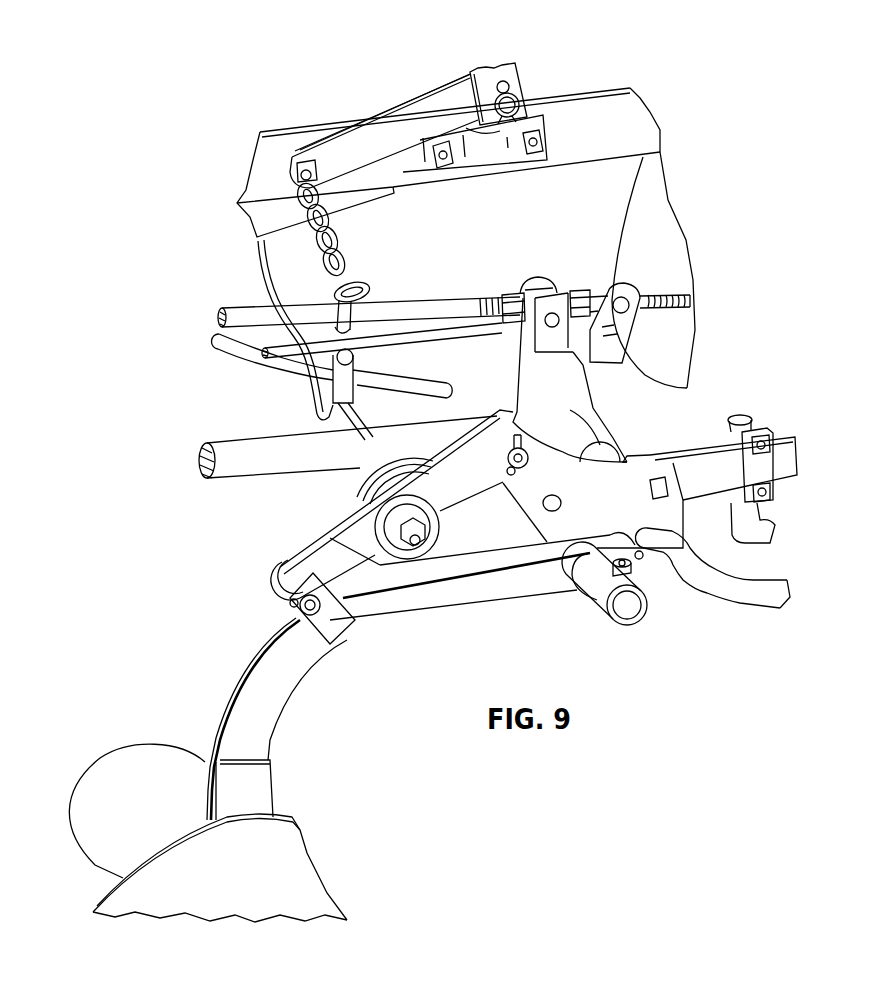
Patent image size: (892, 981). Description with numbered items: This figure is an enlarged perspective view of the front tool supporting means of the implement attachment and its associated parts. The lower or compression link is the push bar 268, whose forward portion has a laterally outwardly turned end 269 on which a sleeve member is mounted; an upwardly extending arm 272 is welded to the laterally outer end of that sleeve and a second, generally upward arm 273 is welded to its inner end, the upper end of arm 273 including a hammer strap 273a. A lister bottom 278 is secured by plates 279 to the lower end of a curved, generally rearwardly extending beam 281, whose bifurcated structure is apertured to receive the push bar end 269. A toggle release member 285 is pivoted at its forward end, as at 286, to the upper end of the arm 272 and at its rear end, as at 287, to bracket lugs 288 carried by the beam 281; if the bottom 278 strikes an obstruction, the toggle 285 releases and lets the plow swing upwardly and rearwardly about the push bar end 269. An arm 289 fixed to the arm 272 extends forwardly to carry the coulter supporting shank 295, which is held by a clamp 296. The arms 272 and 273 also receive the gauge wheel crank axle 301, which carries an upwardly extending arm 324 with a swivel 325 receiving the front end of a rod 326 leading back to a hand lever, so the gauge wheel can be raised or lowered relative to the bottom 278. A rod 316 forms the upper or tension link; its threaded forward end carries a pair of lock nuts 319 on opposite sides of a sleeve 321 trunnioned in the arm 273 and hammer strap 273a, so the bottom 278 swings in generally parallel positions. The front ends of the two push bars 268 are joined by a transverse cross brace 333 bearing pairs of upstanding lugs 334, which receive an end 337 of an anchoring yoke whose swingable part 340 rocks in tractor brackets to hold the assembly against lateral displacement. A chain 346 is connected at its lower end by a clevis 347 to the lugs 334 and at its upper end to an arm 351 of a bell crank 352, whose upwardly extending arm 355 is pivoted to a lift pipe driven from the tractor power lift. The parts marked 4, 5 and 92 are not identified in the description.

The tool bar 4 is at (303, 135).
The frame panel 5 is at (631, 192).
The mounting plate 92 is at (415, 167).
The push bar 268 is at (246, 466).
The laterally outwardly turned end 269 is at (627, 618).
The upwardly extending arm 272 is at (524, 497).
The second arm 273 is at (573, 408).
The hammer strap 273a is at (537, 285).
The lister bottom 278 is at (290, 850).
The plates 279 is at (227, 787).
The curved beam 281 is at (270, 705).
The toggle release member 285 is at (327, 522).
The forward pivot 286 is at (527, 466).
The rear pivot 287 is at (292, 606).
The bracket lugs 288 is at (338, 626).
The arm 289 is at (698, 459).
The coulter supporting shank 295 is at (732, 525).
The clamp 296 is at (770, 432).
The gauge wheel crank axle 301 is at (677, 592).
The rod 316 is at (243, 316).
The lock nuts 319 is at (509, 299).
The sleeve 321 is at (549, 300).
The upwardly extending arm 324 is at (598, 386).
The swivel 325 is at (613, 284).
The rod 326 is at (427, 332).
The transverse cross brace 333 is at (266, 265).
The upstanding lugs 334 is at (340, 378).
The yoke end 337 is at (427, 382).
The swingable yoke part 340 is at (232, 353).
The chain 346 is at (339, 259).
The clevis 347 is at (367, 300).
The bell crank arm 351 is at (380, 127).
The bell crank 352 is at (438, 91).
The upwardly extending arm 355 is at (508, 73).